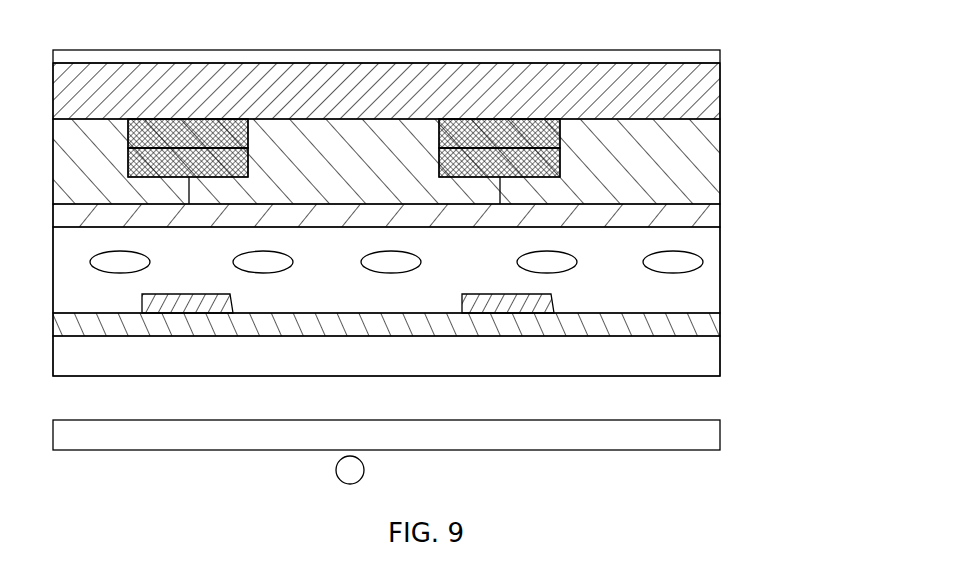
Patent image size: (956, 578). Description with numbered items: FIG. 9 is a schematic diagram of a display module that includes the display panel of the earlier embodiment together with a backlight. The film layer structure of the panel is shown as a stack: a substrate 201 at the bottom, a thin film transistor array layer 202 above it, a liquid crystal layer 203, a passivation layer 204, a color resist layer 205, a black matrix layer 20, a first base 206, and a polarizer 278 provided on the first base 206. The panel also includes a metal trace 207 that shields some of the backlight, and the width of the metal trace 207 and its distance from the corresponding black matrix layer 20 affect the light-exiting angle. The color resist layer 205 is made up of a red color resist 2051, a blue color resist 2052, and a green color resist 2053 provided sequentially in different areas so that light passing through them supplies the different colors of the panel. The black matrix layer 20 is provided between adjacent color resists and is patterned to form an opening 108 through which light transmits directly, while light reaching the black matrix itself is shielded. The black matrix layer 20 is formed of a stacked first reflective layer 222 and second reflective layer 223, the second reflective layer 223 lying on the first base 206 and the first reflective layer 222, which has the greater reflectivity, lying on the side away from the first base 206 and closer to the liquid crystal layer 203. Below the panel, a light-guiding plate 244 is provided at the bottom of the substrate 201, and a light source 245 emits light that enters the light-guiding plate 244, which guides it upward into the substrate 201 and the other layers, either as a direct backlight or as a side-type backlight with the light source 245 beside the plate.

The polarizer 278 is at (720, 54).
The first base 206 is at (720, 80).
The red color resist 2051 is at (692, 146).
The color resist layer 205 is at (720, 186).
The green color resist 2053 is at (78, 146).
The blue color resist 2052 is at (277, 136).
The opening 108 is at (358, 122).
The first reflective layer 222 is at (164, 128).
The second reflective layer 223 is at (201, 150).
The black matrix layer 20 is at (525, 145).
The passivation layer 204 is at (720, 216).
The liquid crystal layer 203 is at (720, 278).
The metal trace 207 is at (176, 304).
The thin film transistor array layer 202 is at (720, 326).
The substrate 201 is at (720, 365).
The light-guiding plate 244 is at (720, 435).
The light source 245 is at (363, 480).